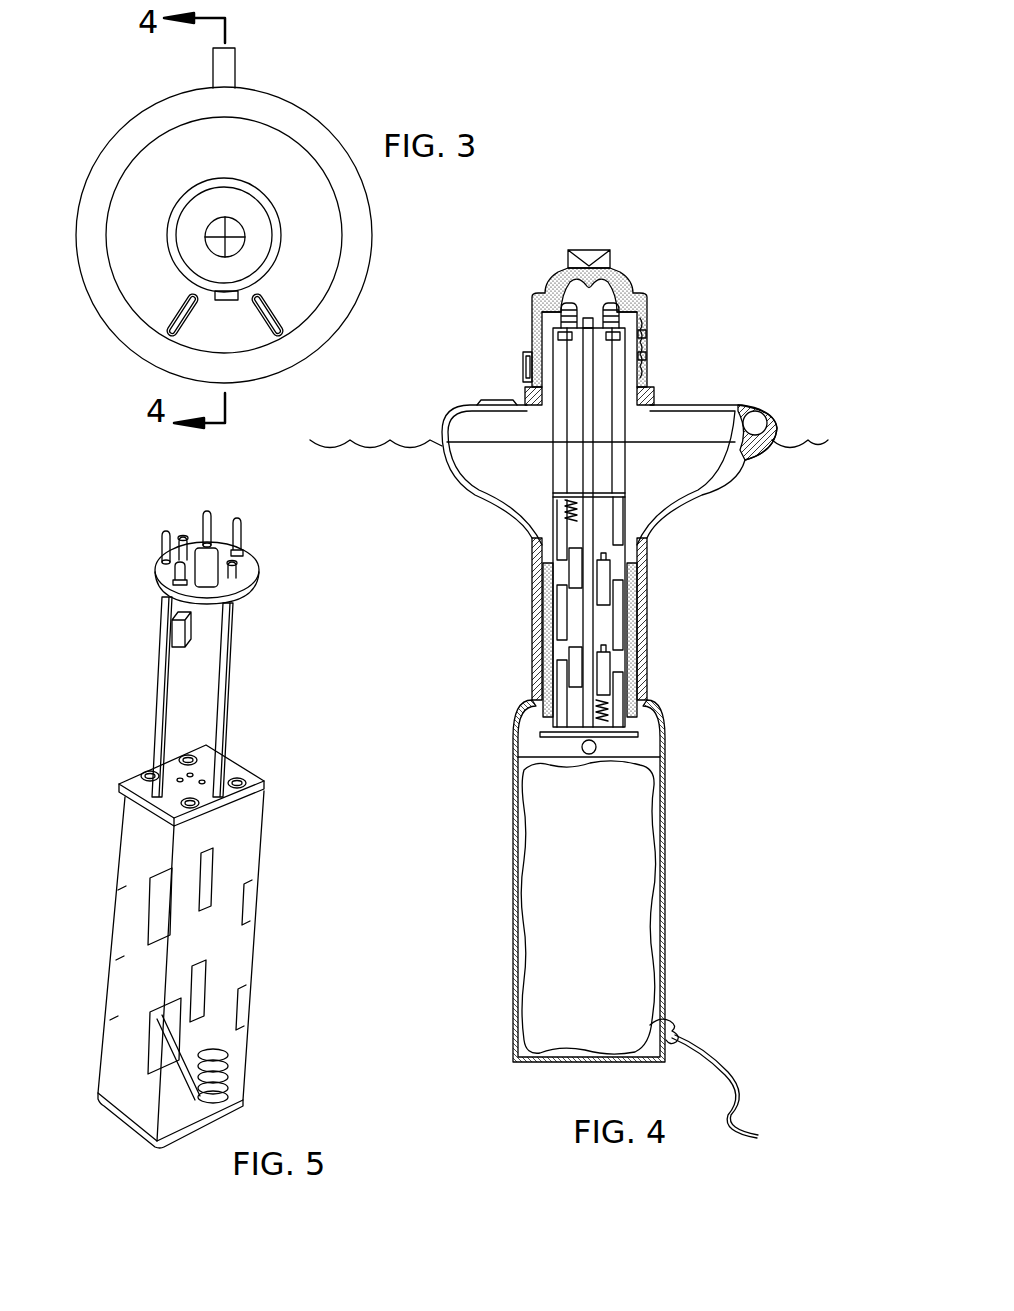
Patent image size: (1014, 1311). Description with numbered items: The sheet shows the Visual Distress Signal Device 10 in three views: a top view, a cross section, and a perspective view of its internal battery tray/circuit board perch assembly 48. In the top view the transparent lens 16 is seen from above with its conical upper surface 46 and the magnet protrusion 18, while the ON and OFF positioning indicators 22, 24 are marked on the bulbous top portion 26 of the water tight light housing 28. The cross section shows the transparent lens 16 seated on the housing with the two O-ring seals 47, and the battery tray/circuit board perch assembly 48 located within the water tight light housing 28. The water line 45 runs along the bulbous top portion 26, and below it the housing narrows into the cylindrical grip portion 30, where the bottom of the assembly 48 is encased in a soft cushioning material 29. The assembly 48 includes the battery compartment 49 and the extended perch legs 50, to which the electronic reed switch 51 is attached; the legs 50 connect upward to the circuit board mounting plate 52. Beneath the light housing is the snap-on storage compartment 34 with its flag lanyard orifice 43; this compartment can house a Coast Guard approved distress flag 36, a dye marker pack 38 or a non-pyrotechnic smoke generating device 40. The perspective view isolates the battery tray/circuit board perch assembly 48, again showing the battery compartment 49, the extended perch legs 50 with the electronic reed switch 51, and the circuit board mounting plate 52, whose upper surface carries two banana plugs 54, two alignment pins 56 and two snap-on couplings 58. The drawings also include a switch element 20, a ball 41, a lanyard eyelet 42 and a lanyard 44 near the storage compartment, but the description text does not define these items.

In FIG. 4, the Visual Distress Signal Device 10 is at (610, 208).
In FIG. 3, the transparent lens 16 is at (249, 217).
In FIG. 4, the transparent lens 16 is at (630, 275).
In FIG. 3, the magnet protrusion 18 is at (226, 301).
In FIG. 4, the switch 20 is at (523, 363).
In FIG. 3, the ON positioning indicator 22 is at (177, 323).
In FIG. 3, the OFF positioning indicator 24 is at (272, 323).
In FIG. 3, the bulbous top portion 26 is at (82, 212).
In FIG. 4, the bulbous top portion 26 is at (472, 497).
In FIG. 3, the water tight light housing 28 is at (373, 241).
In FIG. 4, the water tight light housing 28 is at (517, 525).
In FIG. 4, the soft cushioning material 29 is at (640, 616).
In FIG. 4, the cylindrical grip portion 30 is at (536, 640).
In FIG. 4, the snap-on storage compartment 34 is at (513, 820).
In FIG. 4, the distress flag 36 is at (524, 907).
In FIG. 4, the dye marker pack 38 is at (524, 907).
In FIG. 4, the non-pyrotechnic smoke generating device 40 is at (565, 935).
In FIG. 4, the ball 41 is at (597, 748).
In FIG. 4, the lanyard eyelet 42 is at (765, 418).
In FIG. 4, the flag lanyard orifice 43 is at (672, 1020).
In FIG. 4, the lanyard 44 is at (730, 1078).
In FIG. 4, the water line 45 is at (442, 452).
In FIG. 3, the conical upper surface 46 is at (218, 228).
In FIG. 4, the conical upper surface 46 is at (589, 256).
In FIG. 4, the O-ring seals 47 is at (650, 373).
In FIG. 4, the battery tray/circuit board perch assembly 48 is at (632, 522).
In FIG. 4, the battery compartment 49 is at (575, 620).
In FIG. 5, the battery compartment 49 is at (137, 940).
In FIG. 4, the extended perch legs 50 is at (615, 452).
In FIG. 5, the extended perch legs 50 is at (226, 672).
In FIG. 4, the electronic reed switch 51 is at (556, 345).
In FIG. 5, the electronic reed switch 51 is at (172, 632).
In FIG. 5, the circuit board mounting plate 52 is at (220, 592).
In FIG. 5, the banana plugs 54 is at (240, 530).
In FIG. 5, the alignment pins 56 is at (163, 545).
In FIG. 5, the snap-on couplings 58 is at (184, 535).